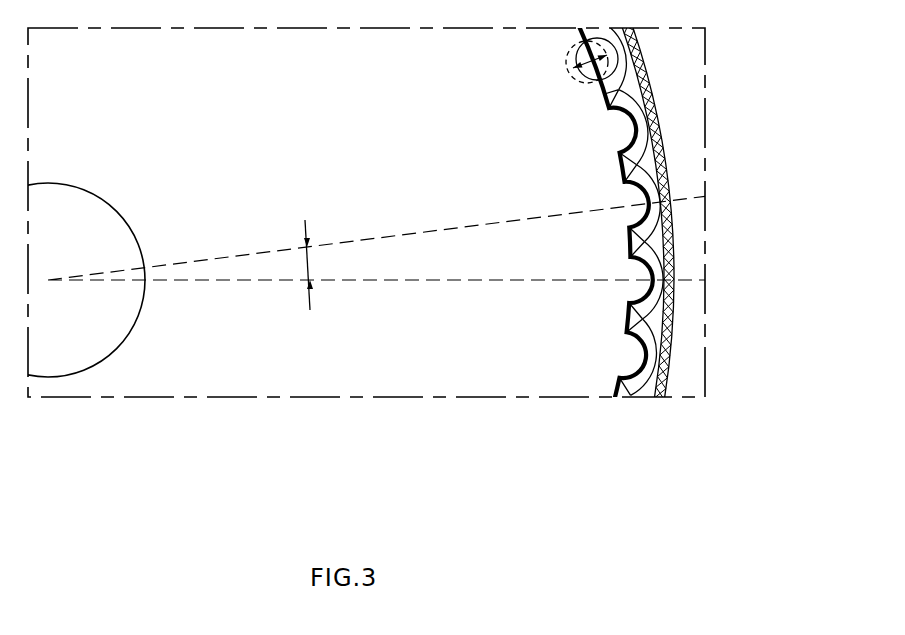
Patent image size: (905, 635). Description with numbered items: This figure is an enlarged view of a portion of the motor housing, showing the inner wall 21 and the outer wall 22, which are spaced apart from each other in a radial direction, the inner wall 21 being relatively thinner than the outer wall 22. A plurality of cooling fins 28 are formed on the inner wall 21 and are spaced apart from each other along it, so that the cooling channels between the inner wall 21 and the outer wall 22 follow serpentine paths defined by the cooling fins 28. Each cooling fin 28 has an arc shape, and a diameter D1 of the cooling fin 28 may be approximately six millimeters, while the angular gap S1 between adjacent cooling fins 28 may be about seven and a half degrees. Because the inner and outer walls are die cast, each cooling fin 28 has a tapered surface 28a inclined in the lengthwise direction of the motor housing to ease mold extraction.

The inner wall 21 is at (645, 241).
The outer wall 22 is at (667, 153).
The cooling fin 28 is at (628, 127).
The tapered surface 28a is at (637, 117).
The diameter of the cooling fin D1 is at (572, 76).
The angular pitch S1 is at (322, 265).